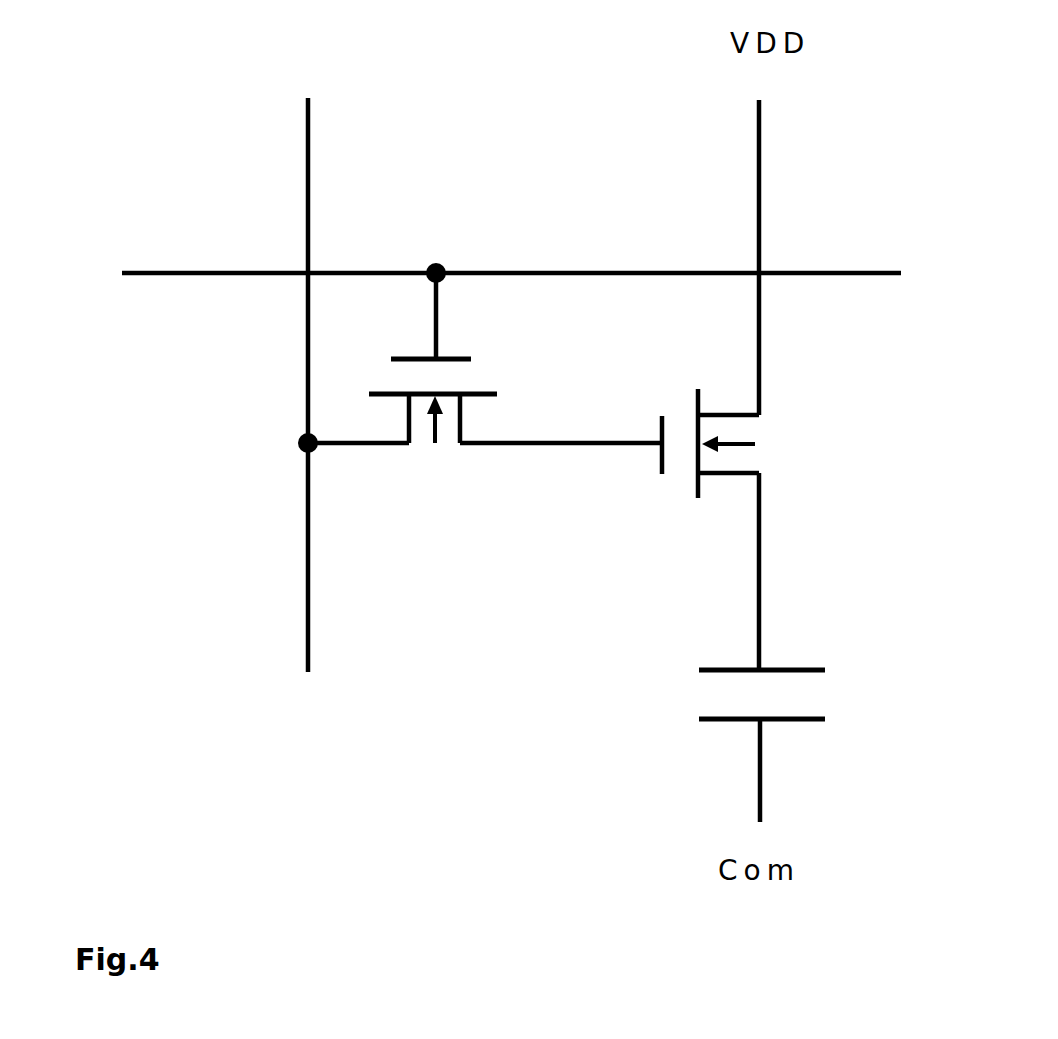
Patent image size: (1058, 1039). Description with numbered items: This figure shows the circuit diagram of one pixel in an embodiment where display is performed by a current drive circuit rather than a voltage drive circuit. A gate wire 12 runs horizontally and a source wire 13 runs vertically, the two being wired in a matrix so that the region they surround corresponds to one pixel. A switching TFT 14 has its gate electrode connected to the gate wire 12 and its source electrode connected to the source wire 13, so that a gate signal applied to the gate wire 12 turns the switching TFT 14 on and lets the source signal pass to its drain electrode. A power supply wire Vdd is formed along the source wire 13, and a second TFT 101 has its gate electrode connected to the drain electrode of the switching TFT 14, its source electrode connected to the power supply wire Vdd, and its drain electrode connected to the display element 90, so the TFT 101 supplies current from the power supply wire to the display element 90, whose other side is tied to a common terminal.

The gate wire 12 is at (473, 353).
The source wire 13 is at (310, 353).
The switching TFT 14 is at (485, 390).
The TFT 101 is at (764, 386).
The display element 90 is at (807, 746).